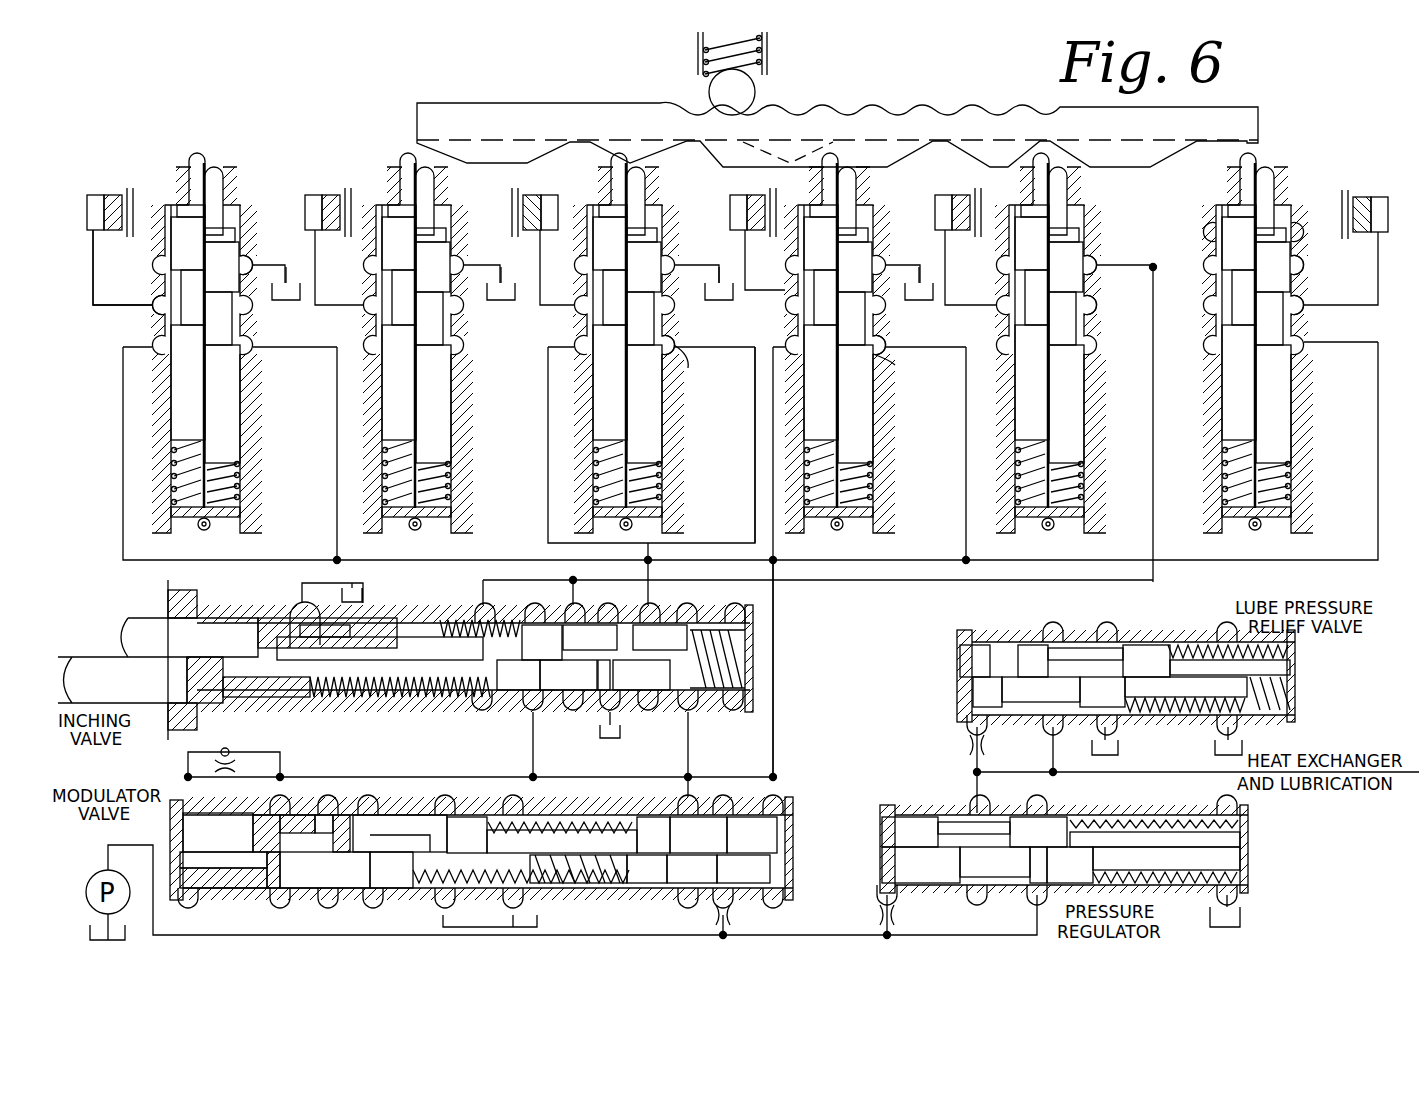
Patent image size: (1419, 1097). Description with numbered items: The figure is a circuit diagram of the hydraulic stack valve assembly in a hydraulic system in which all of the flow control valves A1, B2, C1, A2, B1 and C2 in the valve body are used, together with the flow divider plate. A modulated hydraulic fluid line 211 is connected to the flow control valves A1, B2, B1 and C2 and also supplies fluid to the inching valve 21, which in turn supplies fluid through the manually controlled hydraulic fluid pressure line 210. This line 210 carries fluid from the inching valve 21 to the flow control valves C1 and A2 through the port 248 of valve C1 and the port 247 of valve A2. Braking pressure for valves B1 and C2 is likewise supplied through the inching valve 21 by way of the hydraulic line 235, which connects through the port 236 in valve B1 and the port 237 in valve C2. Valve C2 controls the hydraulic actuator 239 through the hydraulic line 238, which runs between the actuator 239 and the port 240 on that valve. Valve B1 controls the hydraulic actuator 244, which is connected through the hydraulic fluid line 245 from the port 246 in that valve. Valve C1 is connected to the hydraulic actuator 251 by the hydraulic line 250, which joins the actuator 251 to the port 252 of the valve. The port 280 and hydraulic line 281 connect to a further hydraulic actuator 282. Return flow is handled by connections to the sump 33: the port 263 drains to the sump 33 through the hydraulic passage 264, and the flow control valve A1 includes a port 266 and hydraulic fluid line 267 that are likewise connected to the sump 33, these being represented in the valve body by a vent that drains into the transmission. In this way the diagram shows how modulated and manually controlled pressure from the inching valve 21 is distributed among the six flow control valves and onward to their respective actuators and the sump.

The inching valve 21 is at (125, 632).
The sump 33 is at (524, 302).
The manually controlled hydraulic fluid pressure line 210 is at (755, 490).
The modulated hydraulic fluid line 211 is at (775, 705).
The hydraulic line 235 is at (892, 580).
The port 236 is at (1118, 268).
The port 237 is at (1305, 272).
The hydraulic line 238 is at (1340, 305).
The hydraulic actuator 239 is at (1370, 180).
The port 240 is at (1330, 292).
The hydraulic actuator 244 is at (958, 204).
The hydraulic fluid line 245 is at (905, 272).
The port 246 is at (1114, 294).
The port 247 is at (909, 363).
The port 248 is at (701, 372).
The hydraulic line 250 is at (503, 304).
The hydraulic actuator 251 is at (560, 190).
The port 252 is at (703, 334).
The port 263 is at (728, 212).
The hydraulic passage 264 is at (725, 275).
The port 266 is at (250, 260).
The hydraulic fluid line 267 is at (280, 262).
The port 280 is at (170, 300).
The hydraulic line 281 is at (93, 305).
The hydraulic actuator 282 is at (118, 186).
The flow control valve A1 is at (225, 158).
The flow control valve B2 is at (387, 150).
The flow control valve C1 is at (660, 188).
The flow control valve A2 is at (866, 188).
The flow control valve B1 is at (1088, 193).
The flow control valve C2 is at (1296, 182).